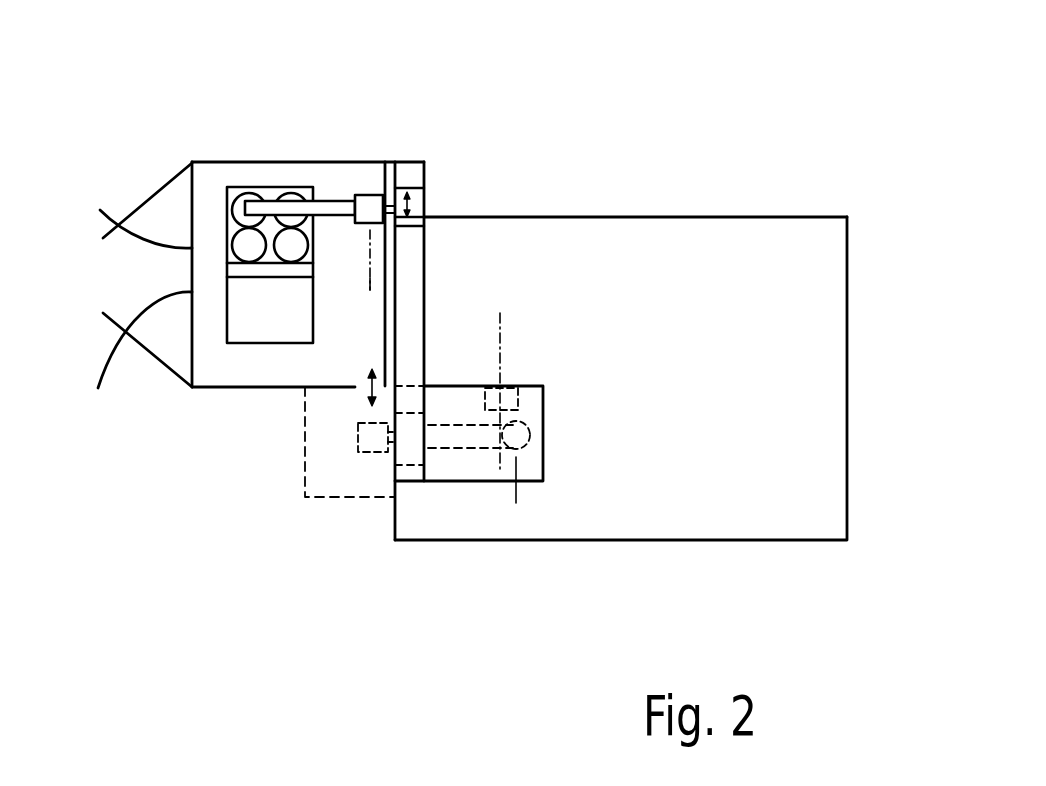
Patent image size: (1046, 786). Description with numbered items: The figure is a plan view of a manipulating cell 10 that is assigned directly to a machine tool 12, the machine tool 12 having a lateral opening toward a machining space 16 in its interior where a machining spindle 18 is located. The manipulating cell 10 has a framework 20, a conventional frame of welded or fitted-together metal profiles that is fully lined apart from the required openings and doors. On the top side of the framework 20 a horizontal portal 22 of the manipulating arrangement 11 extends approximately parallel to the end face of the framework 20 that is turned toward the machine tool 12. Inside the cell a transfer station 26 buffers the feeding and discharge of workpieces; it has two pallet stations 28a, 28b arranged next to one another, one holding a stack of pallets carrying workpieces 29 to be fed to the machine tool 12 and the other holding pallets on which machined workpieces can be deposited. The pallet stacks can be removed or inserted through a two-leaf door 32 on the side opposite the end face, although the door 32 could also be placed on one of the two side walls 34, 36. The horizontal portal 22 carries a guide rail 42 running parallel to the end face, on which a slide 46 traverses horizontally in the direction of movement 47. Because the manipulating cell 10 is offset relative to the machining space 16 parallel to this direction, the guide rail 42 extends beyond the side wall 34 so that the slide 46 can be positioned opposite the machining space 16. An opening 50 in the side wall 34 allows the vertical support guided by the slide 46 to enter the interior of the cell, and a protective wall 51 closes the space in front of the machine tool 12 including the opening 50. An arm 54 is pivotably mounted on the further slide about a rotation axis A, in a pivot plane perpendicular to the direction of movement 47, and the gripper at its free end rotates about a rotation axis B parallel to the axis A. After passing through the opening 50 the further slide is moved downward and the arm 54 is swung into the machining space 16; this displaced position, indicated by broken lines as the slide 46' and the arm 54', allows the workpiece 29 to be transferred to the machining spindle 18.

The manipulating cell 10 is at (307, 126).
The manipulating arrangement 11 is at (454, 121).
The machine tool 12 is at (734, 192).
The machining space 16 is at (469, 480).
The machining spindle 18 is at (533, 388).
The framework 20 is at (210, 395).
The horizontal portal 22 is at (406, 148).
The transfer station 26 is at (193, 160).
The pallet station 28a is at (229, 188).
The pallet station 28b is at (244, 336).
The workpieces 29 is at (246, 198).
The door 32 is at (140, 203).
The side wall 34 is at (282, 388).
The side wall 36 is at (277, 162).
The guide rail 42 is at (418, 313).
The slide 46 is at (387, 281).
The guide rail (lower position) 46' is at (375, 521).
The direction of movement 47 is at (412, 205).
The opening 50 is at (355, 389).
The protective wall 51 is at (307, 498).
The arm 54 is at (319, 161).
The push rod (displaced position) 54' is at (510, 456).
The rotation axis A is at (383, 282).
The rotation axis B is at (518, 442).